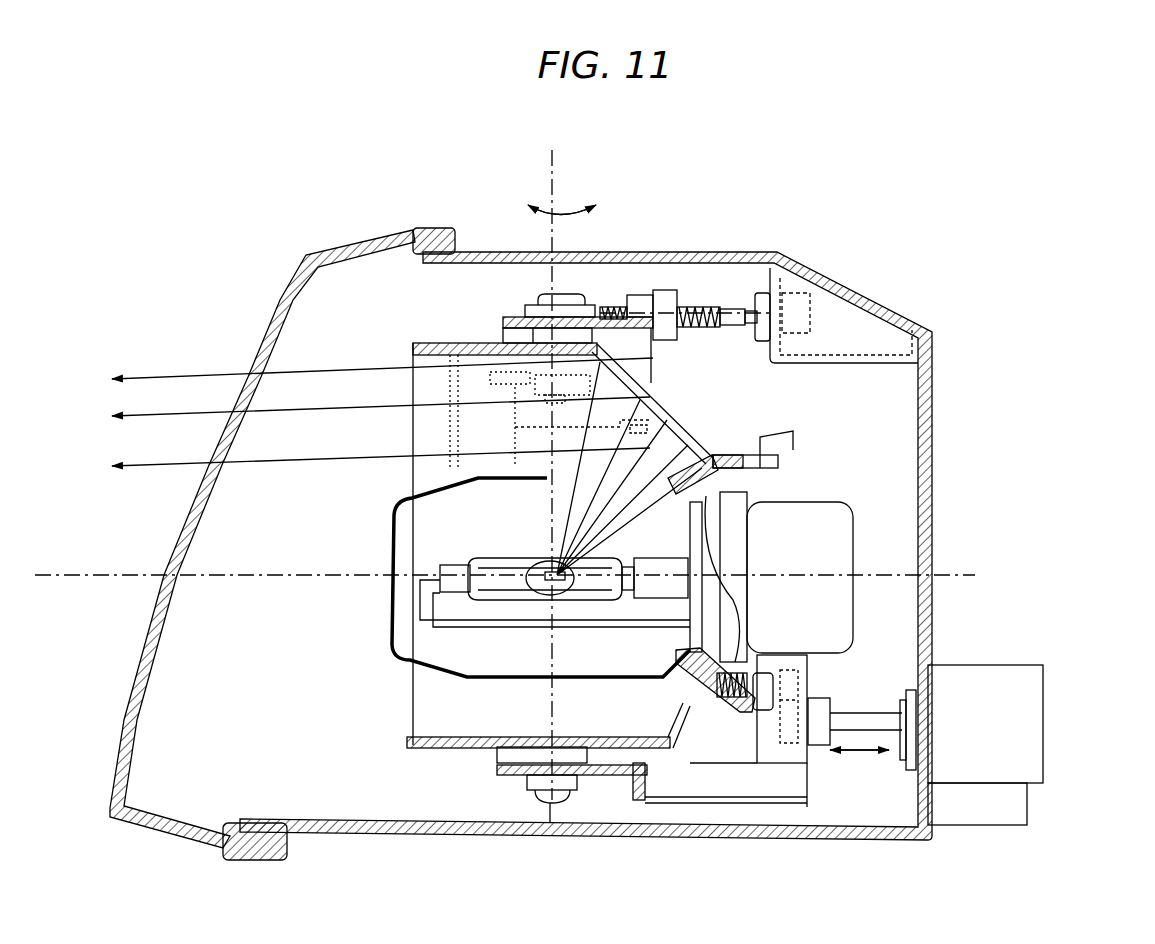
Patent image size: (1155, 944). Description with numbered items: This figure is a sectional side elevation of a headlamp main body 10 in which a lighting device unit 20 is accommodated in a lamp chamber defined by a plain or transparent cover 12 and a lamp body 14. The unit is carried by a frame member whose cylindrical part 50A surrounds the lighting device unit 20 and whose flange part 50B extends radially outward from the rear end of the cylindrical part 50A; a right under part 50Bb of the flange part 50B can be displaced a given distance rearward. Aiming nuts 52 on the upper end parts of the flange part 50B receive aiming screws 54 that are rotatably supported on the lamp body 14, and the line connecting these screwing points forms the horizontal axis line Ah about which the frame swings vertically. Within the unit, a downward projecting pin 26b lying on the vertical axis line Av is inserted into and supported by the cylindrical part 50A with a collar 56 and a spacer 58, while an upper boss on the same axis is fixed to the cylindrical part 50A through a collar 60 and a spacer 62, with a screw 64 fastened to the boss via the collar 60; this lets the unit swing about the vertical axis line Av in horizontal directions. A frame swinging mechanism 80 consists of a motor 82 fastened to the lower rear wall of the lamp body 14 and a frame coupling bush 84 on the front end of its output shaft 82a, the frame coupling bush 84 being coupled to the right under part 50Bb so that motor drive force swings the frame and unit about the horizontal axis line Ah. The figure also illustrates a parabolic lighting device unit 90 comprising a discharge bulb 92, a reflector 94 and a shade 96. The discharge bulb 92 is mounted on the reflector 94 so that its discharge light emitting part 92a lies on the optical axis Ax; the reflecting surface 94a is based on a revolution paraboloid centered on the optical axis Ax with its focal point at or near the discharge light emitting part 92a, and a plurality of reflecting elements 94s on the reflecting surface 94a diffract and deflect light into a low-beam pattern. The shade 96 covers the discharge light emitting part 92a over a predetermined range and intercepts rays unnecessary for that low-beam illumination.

The headlamp main body 10 is at (243, 252).
The plain or transparent cover 12 is at (255, 347).
The lamp body 14 is at (853, 285).
The lighting device unit 20 is at (500, 313).
The pin 26b is at (550, 803).
The cylindrical part 50A is at (597, 775).
The flange part 50B is at (645, 792).
The right under part 50Bb is at (808, 765).
The aiming nut 52 is at (631, 295).
The aiming screw 54 is at (700, 307).
The collar 56 is at (527, 778).
The spacer 58 is at (515, 750).
The collar 60 is at (528, 310).
The spacer 62 is at (525, 340).
The screw 64 is at (573, 297).
The frame swinging mechanism 80 is at (1052, 753).
The motor 82 is at (1018, 695).
The output shaft 82a is at (860, 724).
The frame coupling bush 84 is at (820, 705).
The parabolic lighting device unit 90 is at (417, 332).
The discharge bulb 92 is at (520, 553).
The discharge light emitting part 92a is at (560, 578).
The reflector 94 is at (689, 417).
The reflecting element 94s is at (647, 430).
The reflecting surface 94a is at (687, 697).
The shade 96 is at (390, 623).
The vertical axis line Av is at (556, 157).
The horizontal axis line Ah is at (648, 310).
The optical axis Ax is at (267, 578).